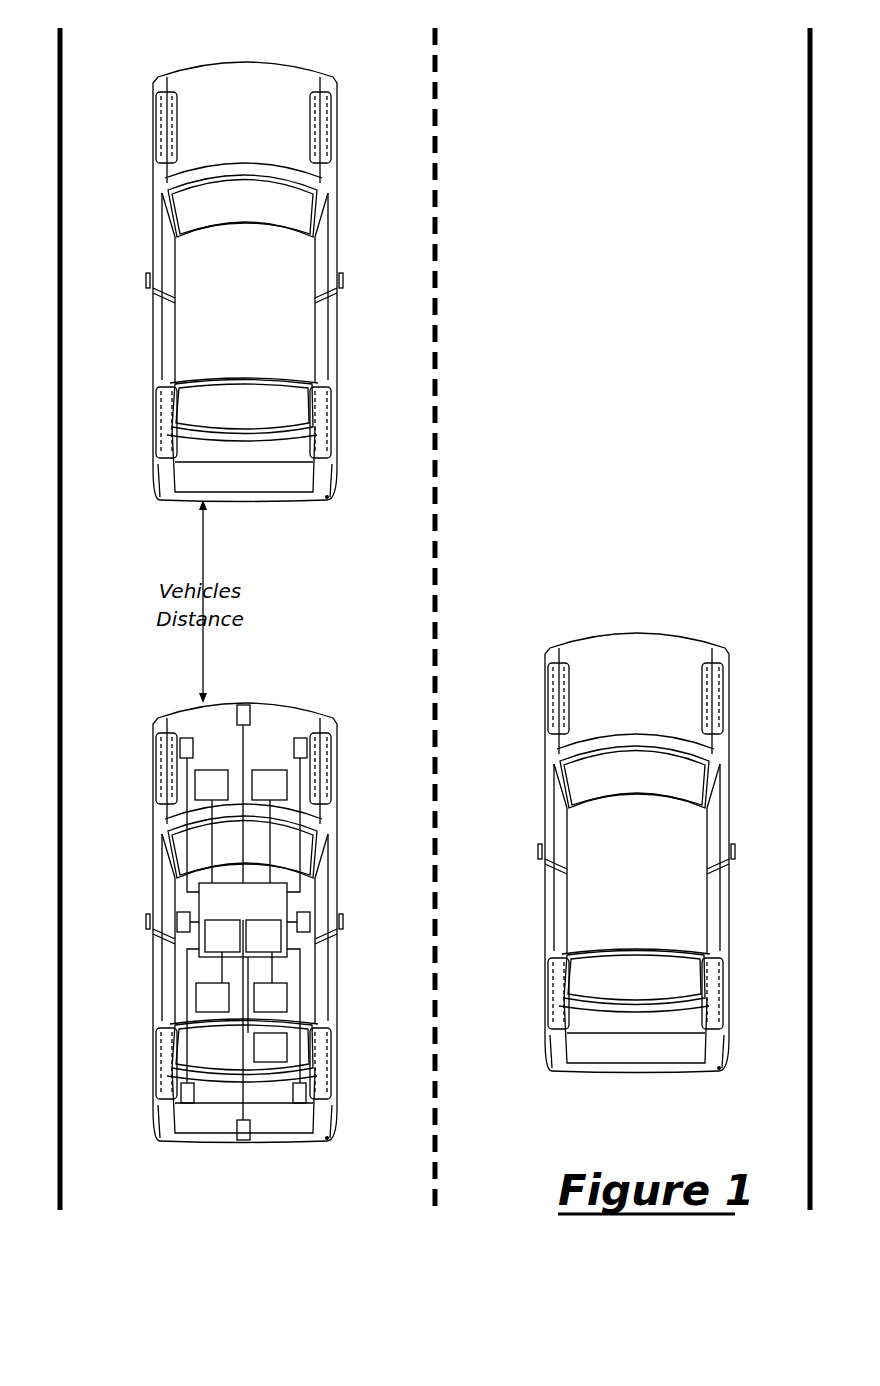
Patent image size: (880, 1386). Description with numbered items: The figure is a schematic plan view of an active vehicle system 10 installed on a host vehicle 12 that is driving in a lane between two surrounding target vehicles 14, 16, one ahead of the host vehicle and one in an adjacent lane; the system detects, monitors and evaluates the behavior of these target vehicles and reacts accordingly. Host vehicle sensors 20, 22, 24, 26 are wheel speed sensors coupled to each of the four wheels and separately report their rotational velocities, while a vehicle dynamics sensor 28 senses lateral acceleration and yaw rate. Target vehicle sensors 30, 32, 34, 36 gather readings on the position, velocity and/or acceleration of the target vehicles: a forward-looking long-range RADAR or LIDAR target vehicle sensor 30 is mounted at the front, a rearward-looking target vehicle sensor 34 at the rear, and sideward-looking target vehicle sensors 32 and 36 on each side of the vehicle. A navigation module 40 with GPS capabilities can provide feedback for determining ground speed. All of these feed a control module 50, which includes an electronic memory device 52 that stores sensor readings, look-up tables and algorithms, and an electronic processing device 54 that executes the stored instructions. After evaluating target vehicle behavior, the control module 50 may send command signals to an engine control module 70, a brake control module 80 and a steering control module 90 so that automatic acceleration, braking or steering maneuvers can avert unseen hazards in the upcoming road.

The active vehicle system 10 is at (376, 724).
The host vehicle 12 is at (118, 828).
The target vehicle 14 is at (112, 198).
The target vehicle 16 is at (660, 616).
The host vehicle sensor 20 is at (307, 751).
The host vehicle sensor 22 is at (300, 1103).
The host vehicle sensor 24 is at (187, 1103).
The host vehicle sensor 26 is at (187, 738).
The vehicle dynamics sensor 28 is at (270, 1047).
The target vehicle sensor 30 is at (241, 725).
The target vehicle sensor 32 is at (310, 920).
The target vehicle sensor 34 is at (241, 1141).
The target vehicle sensor 36 is at (177, 920).
The navigation module 40 is at (270, 997).
The control module 50 is at (243, 920).
The electronic memory device 52 is at (222, 936).
The electronic processing device 54 is at (263, 936).
The engine control module 70 is at (211, 785).
The brake control module 80 is at (212, 997).
The steering control module 90 is at (269, 785).